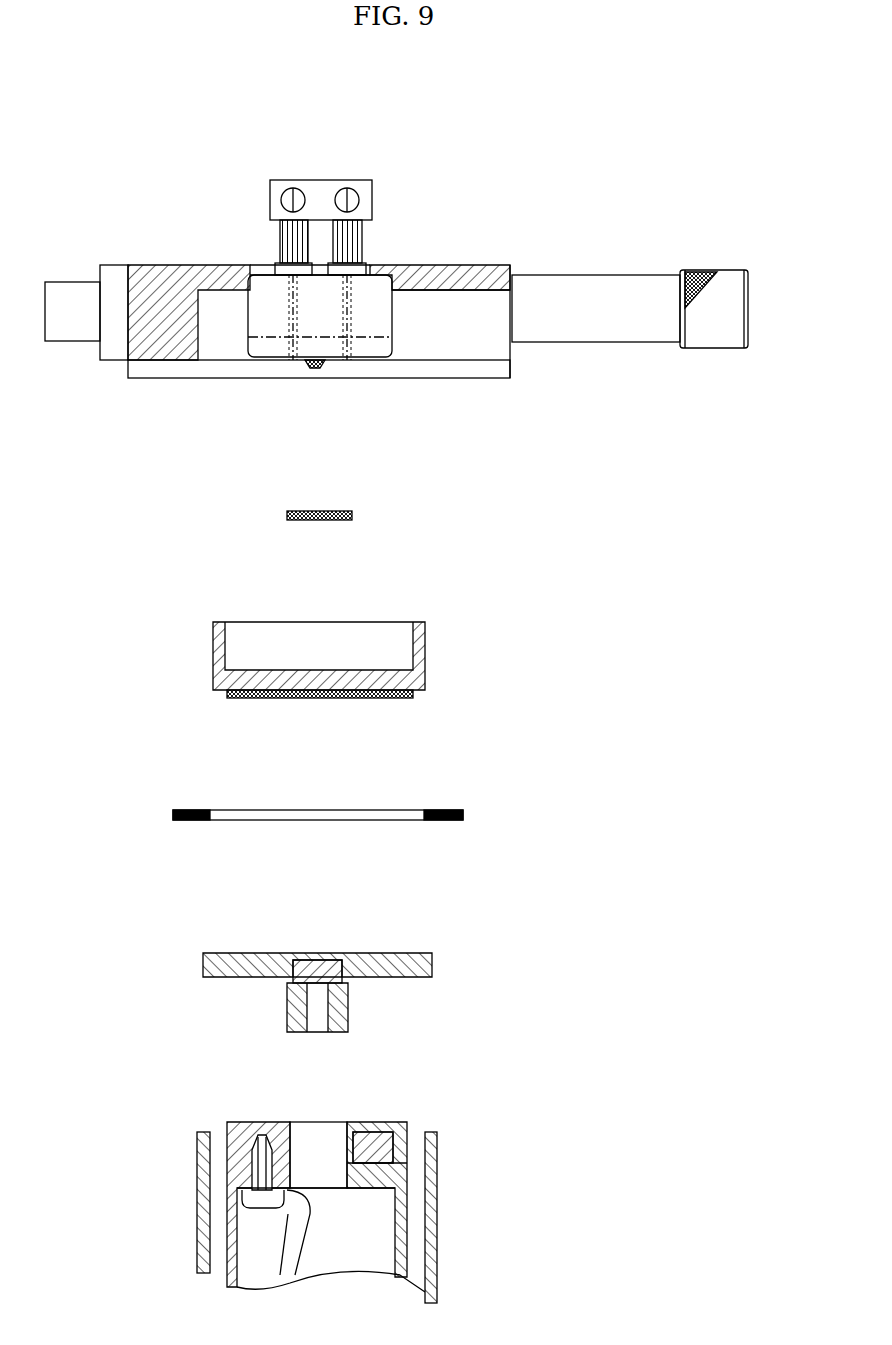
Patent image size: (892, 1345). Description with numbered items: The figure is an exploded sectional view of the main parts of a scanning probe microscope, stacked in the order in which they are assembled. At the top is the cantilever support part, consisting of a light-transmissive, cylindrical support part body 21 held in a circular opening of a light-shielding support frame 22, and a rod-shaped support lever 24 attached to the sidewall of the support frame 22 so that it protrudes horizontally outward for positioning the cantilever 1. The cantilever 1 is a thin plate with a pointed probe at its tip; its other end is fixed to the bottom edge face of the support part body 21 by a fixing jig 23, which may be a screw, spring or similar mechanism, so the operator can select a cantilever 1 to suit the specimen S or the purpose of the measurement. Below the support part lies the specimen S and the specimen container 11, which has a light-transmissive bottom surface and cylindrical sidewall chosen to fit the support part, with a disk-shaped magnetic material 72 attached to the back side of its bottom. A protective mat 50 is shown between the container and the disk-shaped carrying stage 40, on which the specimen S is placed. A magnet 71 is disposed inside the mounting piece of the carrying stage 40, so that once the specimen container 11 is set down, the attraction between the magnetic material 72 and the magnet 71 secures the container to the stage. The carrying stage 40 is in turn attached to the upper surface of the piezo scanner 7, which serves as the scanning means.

The cantilever 1 is at (311, 378).
The support part body 21 is at (372, 296).
The support frame 22 is at (113, 272).
The fixing jig 23 is at (319, 170).
The support lever 24 is at (607, 286).
The specimen S is at (290, 517).
The specimen container 11 is at (427, 658).
The magnetic material 72 is at (245, 699).
The protective mat 50 is at (445, 821).
The carrying stage 40 is at (232, 980).
The magnet 71 is at (348, 986).
The piezo scanner 7 is at (437, 1229).